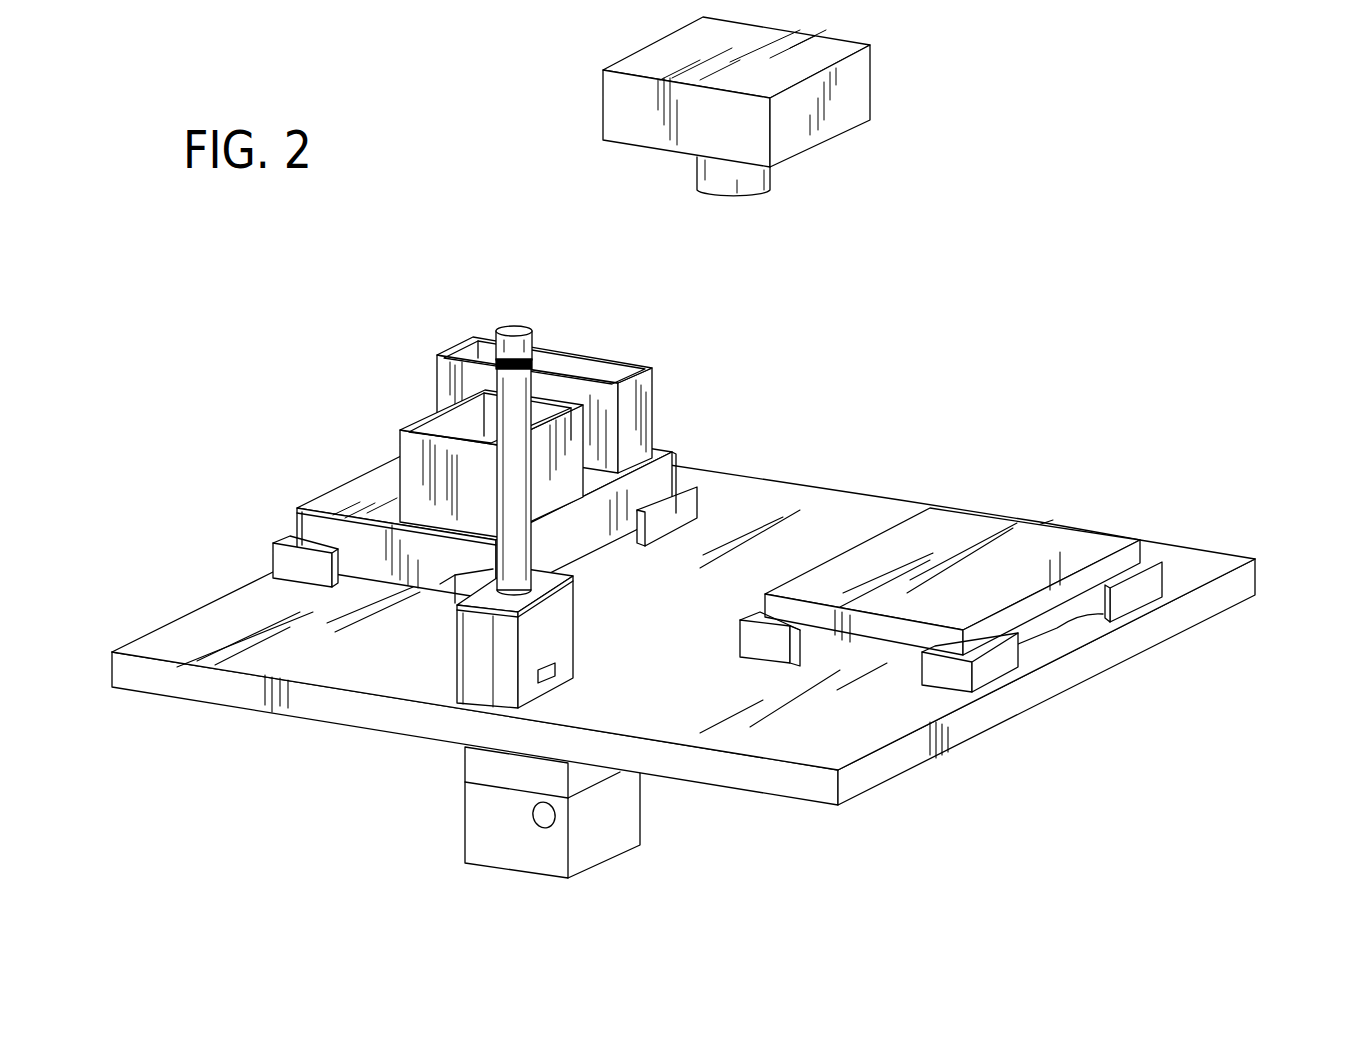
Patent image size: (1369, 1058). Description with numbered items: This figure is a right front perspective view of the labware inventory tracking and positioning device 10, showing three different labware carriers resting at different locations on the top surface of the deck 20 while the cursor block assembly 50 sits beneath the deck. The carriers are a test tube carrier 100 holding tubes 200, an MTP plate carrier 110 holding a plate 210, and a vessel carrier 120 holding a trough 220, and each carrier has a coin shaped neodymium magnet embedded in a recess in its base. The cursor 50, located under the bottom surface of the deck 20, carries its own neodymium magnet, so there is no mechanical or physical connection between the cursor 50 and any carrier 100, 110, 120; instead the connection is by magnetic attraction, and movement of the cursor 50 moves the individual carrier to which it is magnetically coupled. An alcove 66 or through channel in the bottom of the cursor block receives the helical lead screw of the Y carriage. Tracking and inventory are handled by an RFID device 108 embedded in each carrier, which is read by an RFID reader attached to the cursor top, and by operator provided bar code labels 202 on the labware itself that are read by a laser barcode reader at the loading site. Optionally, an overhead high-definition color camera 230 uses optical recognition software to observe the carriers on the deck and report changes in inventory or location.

The labware inventory tracking and positioning device 10 is at (978, 370).
The deck 20 is at (858, 745).
The cursor block assembly 50 is at (600, 835).
The alcove 66 is at (540, 822).
The test tube carrier 100 is at (575, 645).
The RFID device 108 is at (538, 672).
The MTP plate carrier 110 is at (1163, 577).
The vessel carrier 120 is at (697, 495).
The tube 200 is at (507, 488).
The bar code label 202 is at (497, 339).
The plate 210 is at (1055, 552).
The trough 220 is at (417, 423).
The overhead high-definition color camera 230 is at (893, 80).